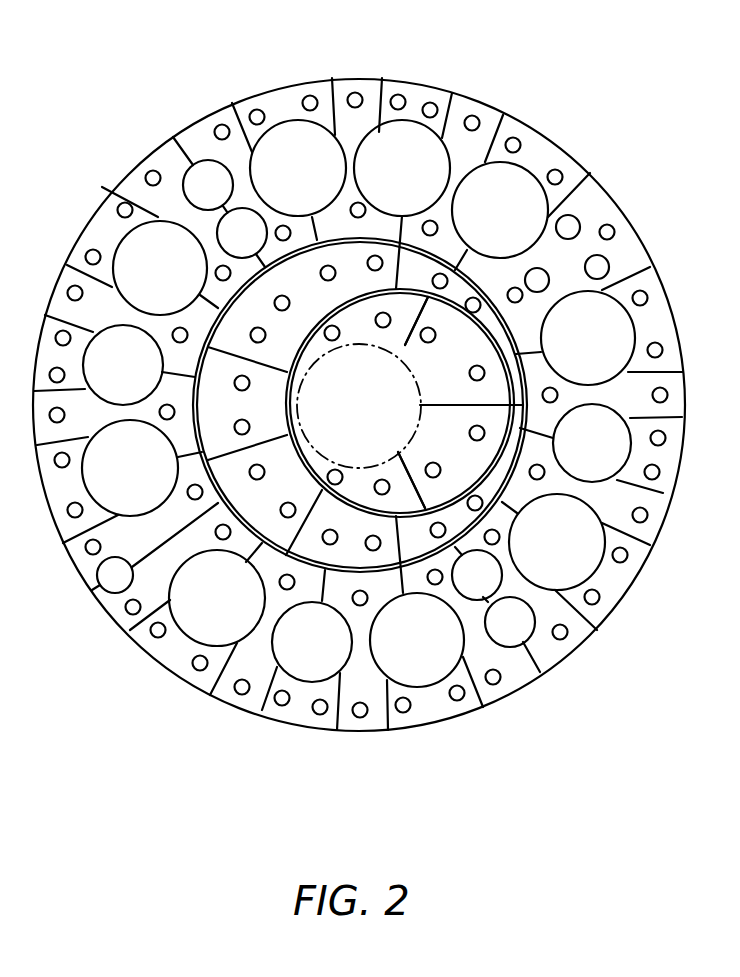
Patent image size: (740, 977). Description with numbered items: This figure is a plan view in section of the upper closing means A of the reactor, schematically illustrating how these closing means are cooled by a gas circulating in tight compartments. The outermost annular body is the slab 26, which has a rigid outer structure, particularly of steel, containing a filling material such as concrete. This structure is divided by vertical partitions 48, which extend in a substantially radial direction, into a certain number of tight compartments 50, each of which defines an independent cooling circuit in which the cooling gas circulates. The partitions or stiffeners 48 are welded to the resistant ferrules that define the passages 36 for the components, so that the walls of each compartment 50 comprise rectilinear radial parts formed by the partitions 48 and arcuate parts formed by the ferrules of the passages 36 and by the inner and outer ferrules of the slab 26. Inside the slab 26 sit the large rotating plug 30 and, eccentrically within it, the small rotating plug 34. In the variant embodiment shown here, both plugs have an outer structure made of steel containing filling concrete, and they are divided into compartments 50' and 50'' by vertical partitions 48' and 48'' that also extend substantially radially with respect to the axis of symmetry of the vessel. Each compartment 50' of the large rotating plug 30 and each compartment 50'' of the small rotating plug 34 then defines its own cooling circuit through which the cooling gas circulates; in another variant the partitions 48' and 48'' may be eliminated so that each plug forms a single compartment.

The plate assembly A is at (360, 79).
The slab 26 is at (92, 209).
The large rotating plug 30 is at (204, 452).
The small rotating plug 34 is at (357, 298).
The passages 36 is at (290, 123).
The vertical partitions 48 is at (209, 688).
The tight compartments 50 is at (501, 700).
The vertical partitions 48' is at (247, 403).
The compartments 50' is at (245, 568).
The vertical partitions 48'' is at (385, 340).
The compartments 50'' is at (377, 457).